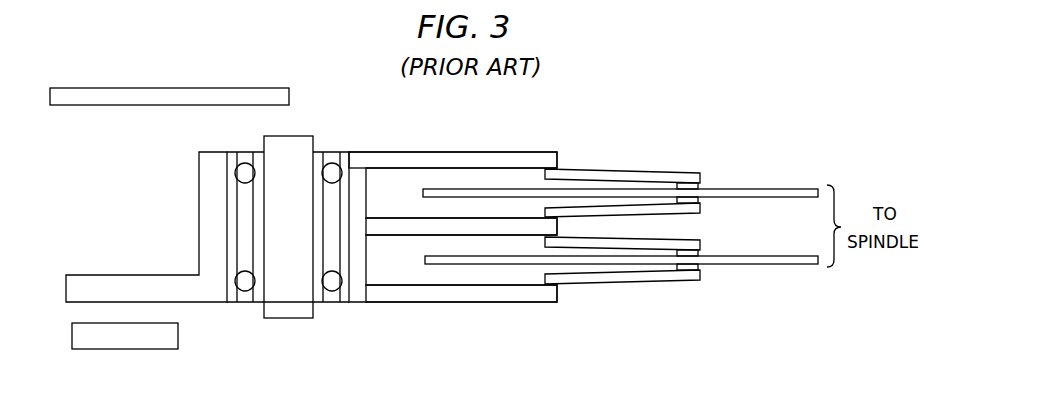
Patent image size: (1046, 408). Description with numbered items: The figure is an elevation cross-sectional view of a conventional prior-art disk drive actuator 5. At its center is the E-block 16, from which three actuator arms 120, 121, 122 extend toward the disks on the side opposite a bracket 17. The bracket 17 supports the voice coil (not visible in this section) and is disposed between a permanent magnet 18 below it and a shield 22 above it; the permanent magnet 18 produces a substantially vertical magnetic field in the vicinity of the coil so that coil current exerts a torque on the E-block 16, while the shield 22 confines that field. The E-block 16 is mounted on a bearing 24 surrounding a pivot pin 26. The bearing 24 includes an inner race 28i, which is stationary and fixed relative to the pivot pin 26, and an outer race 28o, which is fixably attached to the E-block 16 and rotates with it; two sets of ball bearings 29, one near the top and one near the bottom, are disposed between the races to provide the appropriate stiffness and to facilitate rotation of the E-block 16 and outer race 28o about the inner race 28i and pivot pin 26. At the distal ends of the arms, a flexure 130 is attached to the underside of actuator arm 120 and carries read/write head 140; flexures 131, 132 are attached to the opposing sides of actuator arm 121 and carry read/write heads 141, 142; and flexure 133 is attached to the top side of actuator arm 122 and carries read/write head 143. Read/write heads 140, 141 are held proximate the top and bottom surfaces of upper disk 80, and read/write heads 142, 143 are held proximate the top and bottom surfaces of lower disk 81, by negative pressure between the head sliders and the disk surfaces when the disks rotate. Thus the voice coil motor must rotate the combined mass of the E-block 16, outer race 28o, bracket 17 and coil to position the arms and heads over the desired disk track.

The actuator 5 is at (672, 82).
The shield 22 is at (84, 88).
The bracket 17 is at (100, 275).
The permanent magnet 18 is at (100, 350).
The bearing 24 is at (242, 312).
The pivot pin 26 is at (287, 320).
The outer race 28o is at (233, 152).
The inner race 28i is at (257, 152).
The ball bearings 29 is at (322, 175).
The E-block 16 is at (383, 152).
The actuator arm 120 is at (508, 152).
The actuator arm 121 is at (405, 226).
The actuator arm 122 is at (507, 303).
The flexure 130 is at (585, 169).
The flexure 131 is at (705, 208).
The flexure 132 is at (631, 246).
The flexure 133 is at (587, 286).
The read/write head 140 is at (697, 183).
The read/write head 141 is at (700, 204).
The read/write head 142 is at (700, 254).
The read/write head 143 is at (693, 271).
The upper disk 80 is at (793, 189).
The lower disk 81 is at (795, 265).